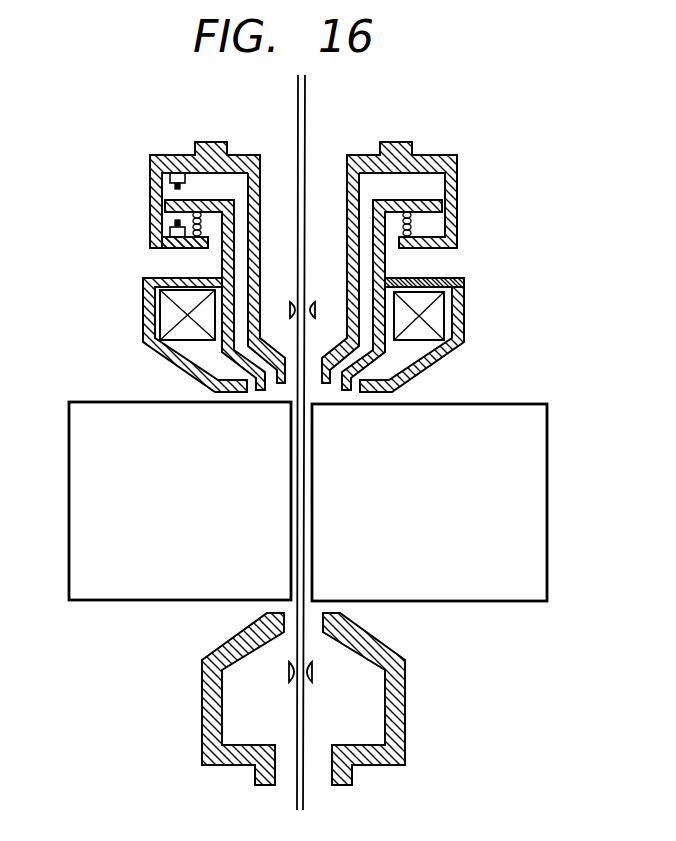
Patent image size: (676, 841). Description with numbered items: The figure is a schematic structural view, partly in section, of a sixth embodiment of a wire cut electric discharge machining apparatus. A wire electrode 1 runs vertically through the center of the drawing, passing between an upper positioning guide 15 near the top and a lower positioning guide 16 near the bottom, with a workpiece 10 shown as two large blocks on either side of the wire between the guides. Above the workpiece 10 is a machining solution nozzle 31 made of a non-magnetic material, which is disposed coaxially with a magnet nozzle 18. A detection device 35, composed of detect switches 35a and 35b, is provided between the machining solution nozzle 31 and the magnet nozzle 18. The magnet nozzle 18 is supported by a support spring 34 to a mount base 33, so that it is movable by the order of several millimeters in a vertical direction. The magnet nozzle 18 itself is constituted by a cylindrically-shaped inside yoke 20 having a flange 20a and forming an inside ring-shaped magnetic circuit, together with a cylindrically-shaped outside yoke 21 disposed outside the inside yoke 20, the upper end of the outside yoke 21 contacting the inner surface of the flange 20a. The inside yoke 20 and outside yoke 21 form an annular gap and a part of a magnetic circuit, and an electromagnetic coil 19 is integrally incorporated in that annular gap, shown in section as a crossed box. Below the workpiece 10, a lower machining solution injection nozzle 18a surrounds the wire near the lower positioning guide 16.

The magnetic tape 1 is at (305, 118).
The tape reel / cassette body 10 is at (496, 604).
The upper positioning guide 15 is at (312, 304).
The lower positioning guide 16 is at (288, 674).
The magnet nozzle 18 is at (463, 348).
The lower machining solution injection nozzle 18a is at (203, 694).
The electromagnetic coil 19 is at (170, 320).
The inside yoke 20 is at (380, 331).
The flange 20a is at (462, 280).
The outside yoke 21 is at (463, 318).
The machining solution nozzle 31 is at (259, 164).
The mount base 33 is at (150, 164).
The support spring 34 is at (182, 250).
The detection device 35 is at (116, 208).
The detect switch 35a is at (170, 180).
The detect switch 35b is at (170, 230).